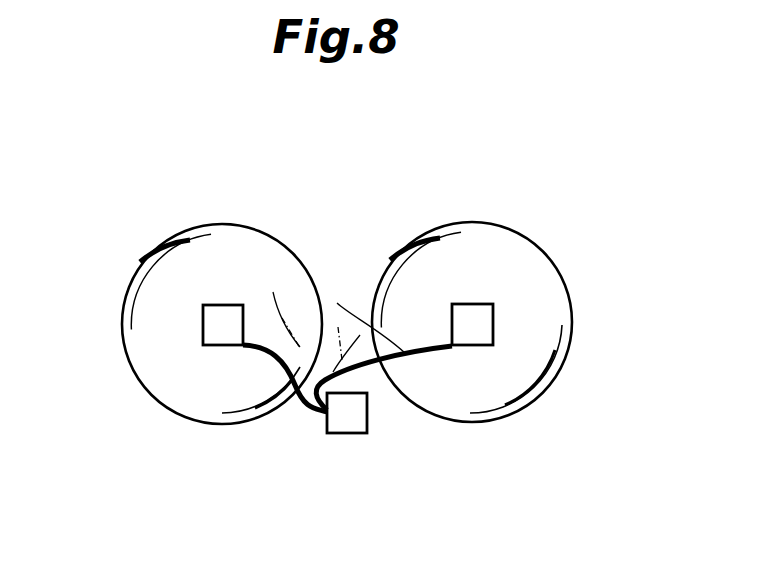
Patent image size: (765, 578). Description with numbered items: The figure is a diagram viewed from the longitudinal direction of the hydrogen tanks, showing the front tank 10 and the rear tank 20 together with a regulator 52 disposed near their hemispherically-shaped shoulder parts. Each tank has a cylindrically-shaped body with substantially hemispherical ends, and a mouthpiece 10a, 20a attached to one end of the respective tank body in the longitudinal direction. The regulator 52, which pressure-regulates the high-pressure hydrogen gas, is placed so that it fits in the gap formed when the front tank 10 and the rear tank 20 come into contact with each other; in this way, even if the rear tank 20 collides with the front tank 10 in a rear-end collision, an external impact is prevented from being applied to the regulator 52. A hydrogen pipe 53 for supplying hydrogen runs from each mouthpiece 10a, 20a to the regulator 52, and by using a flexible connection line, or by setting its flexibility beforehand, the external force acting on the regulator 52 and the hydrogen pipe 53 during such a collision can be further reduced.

The front tank 10 is at (250, 247).
The mouthpiece 10a is at (213, 318).
The rear tank 20 is at (437, 265).
The mouthpiece 20a is at (480, 310).
The regulator 52 is at (355, 420).
The hydrogen pipe 53 is at (272, 347).